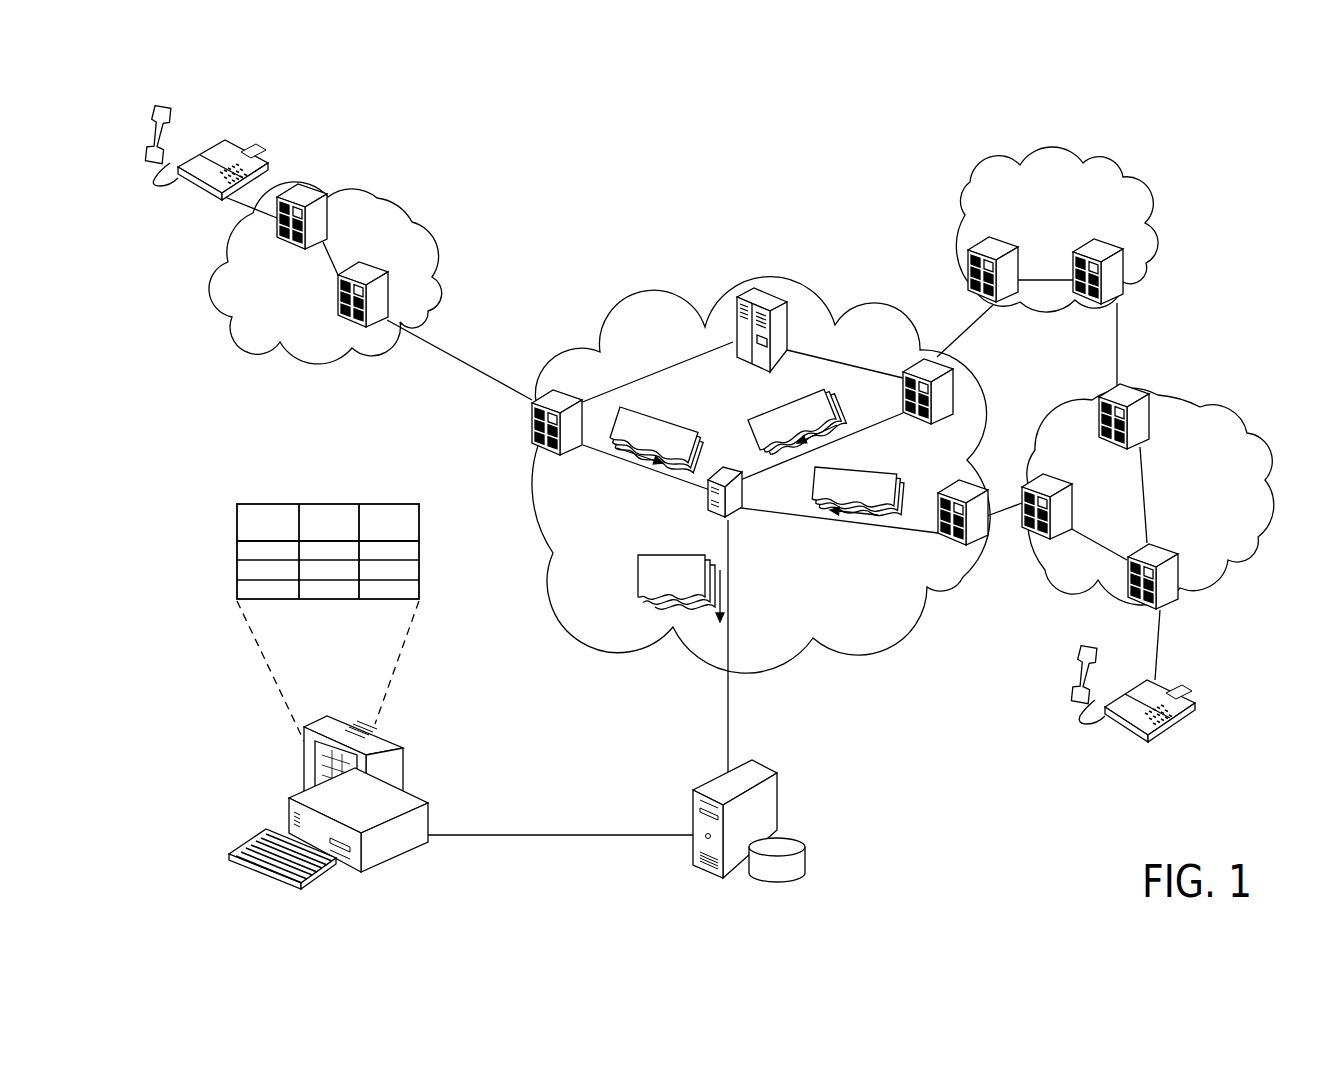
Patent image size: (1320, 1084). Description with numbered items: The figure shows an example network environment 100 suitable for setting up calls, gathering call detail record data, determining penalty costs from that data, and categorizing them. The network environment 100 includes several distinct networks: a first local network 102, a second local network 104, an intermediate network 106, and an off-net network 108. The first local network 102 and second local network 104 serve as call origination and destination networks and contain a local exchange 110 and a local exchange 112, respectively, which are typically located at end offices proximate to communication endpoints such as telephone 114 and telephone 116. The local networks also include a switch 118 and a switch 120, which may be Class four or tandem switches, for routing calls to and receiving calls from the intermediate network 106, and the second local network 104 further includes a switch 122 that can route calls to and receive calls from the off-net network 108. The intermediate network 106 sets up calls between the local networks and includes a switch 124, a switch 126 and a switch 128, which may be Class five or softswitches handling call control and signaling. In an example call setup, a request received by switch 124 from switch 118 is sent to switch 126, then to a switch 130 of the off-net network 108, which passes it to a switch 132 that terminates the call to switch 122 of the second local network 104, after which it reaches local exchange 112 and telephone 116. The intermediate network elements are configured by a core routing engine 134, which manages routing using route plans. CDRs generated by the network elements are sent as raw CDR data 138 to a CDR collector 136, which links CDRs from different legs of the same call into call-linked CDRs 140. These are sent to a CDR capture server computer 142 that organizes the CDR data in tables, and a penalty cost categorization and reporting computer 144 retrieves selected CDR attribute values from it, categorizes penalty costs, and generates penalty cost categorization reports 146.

The network environment 100 is at (1186, 164).
The first local network 102 is at (325, 273).
The second local network 104 is at (1150, 496).
The intermediate network 106 is at (761, 475).
The off-net network 108 is at (1057, 229).
The local exchange 110 is at (299, 188).
The local exchange 112 is at (1169, 597).
The telephone 114 is at (247, 152).
The telephone 116 is at (1177, 722).
The switch 118 is at (372, 276).
The switch 120 is at (1047, 487).
The switch 122 is at (1123, 393).
The switch 124 is at (547, 396).
The switch 126 is at (921, 369).
The switch 128 is at (957, 492).
The switch 130 is at (967, 240).
The switch 132 is at (1118, 283).
The core routing engine 134 is at (751, 290).
The CDR collector 136 is at (708, 493).
The raw CDR data 138 is at (760, 414).
The call-linked CDRs 140 is at (640, 563).
The CDR capture server computer 142 is at (693, 850).
The penalty cost categorization and reporting computer 144 is at (405, 772).
The penalty cost categorization reports 146 is at (293, 504).